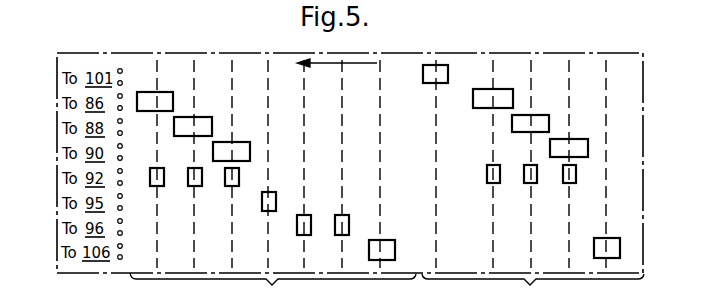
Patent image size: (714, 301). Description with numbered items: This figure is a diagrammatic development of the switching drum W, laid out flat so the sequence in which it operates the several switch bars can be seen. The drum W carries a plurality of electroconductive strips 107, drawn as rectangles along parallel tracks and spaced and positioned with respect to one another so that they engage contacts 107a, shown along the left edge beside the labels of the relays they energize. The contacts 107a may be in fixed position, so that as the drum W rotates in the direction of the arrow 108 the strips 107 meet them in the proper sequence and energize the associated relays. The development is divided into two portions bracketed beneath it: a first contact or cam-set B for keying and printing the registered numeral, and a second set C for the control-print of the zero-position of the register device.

The electroconductive strips 107 is at (221, 142).
The contacts 107a is at (121, 80).
The arrow 108 is at (358, 63).
The switching drum W is at (643, 131).
The first contact set B is at (273, 287).
The second set C is at (533, 287).